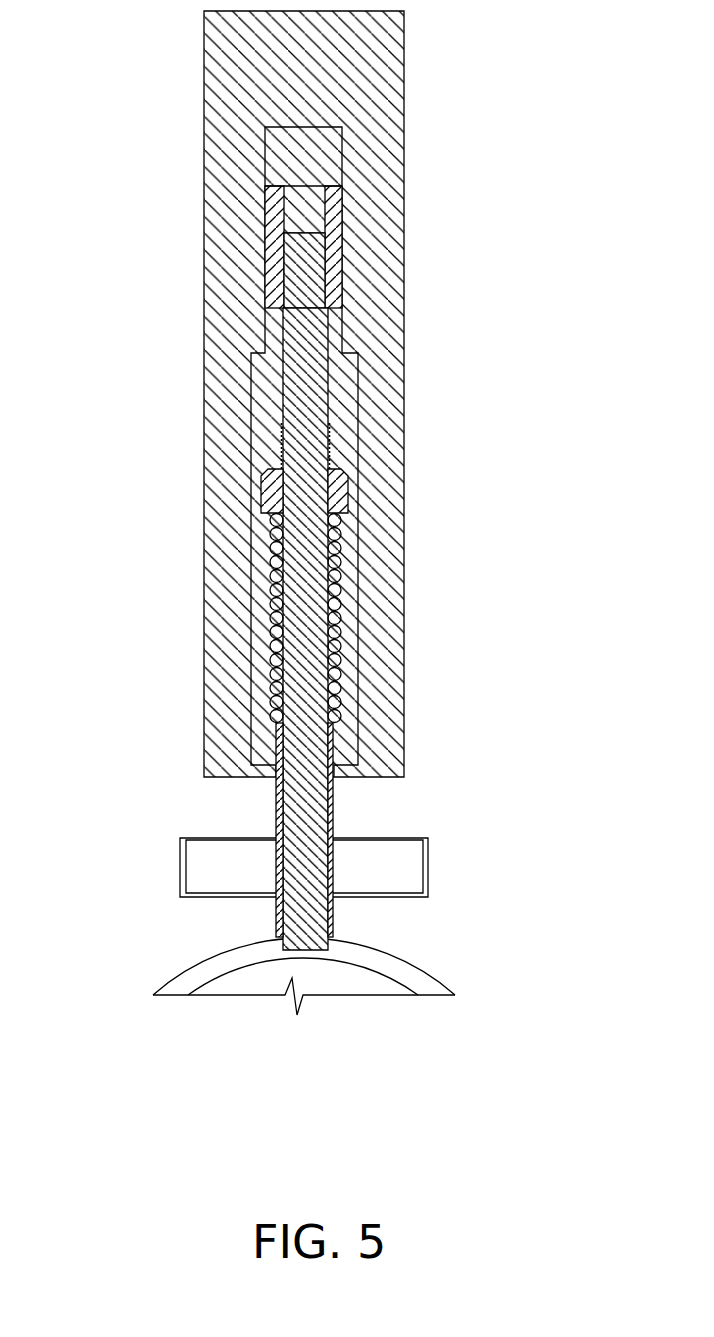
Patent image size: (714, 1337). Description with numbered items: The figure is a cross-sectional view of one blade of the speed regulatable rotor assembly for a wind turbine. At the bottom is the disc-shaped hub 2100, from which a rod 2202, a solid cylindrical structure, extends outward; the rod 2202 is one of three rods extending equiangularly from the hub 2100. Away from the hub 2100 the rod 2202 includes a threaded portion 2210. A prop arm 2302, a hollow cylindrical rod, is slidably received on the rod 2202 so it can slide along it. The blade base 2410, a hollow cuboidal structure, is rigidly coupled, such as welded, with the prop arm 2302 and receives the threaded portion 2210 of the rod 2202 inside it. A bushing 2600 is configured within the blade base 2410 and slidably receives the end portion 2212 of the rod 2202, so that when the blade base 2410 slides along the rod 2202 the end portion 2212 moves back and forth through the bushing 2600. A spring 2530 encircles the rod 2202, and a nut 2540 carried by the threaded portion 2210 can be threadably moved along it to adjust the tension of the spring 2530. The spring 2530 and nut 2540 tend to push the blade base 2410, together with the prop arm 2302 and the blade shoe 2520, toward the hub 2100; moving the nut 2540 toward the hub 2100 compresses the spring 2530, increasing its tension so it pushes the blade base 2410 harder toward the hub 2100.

The hub 2100 is at (403, 958).
The blade shoe 2520 is at (180, 867).
The blade base 2410 is at (226, 308).
The bushing 2600 is at (333, 210).
The end portion 2212 is at (305, 267).
The threaded portion 2210 is at (327, 438).
The rod 2202 is at (312, 615).
The nut 2540 is at (348, 493).
The spring 2530 is at (337, 710).
The prop arm 2302 is at (277, 820).